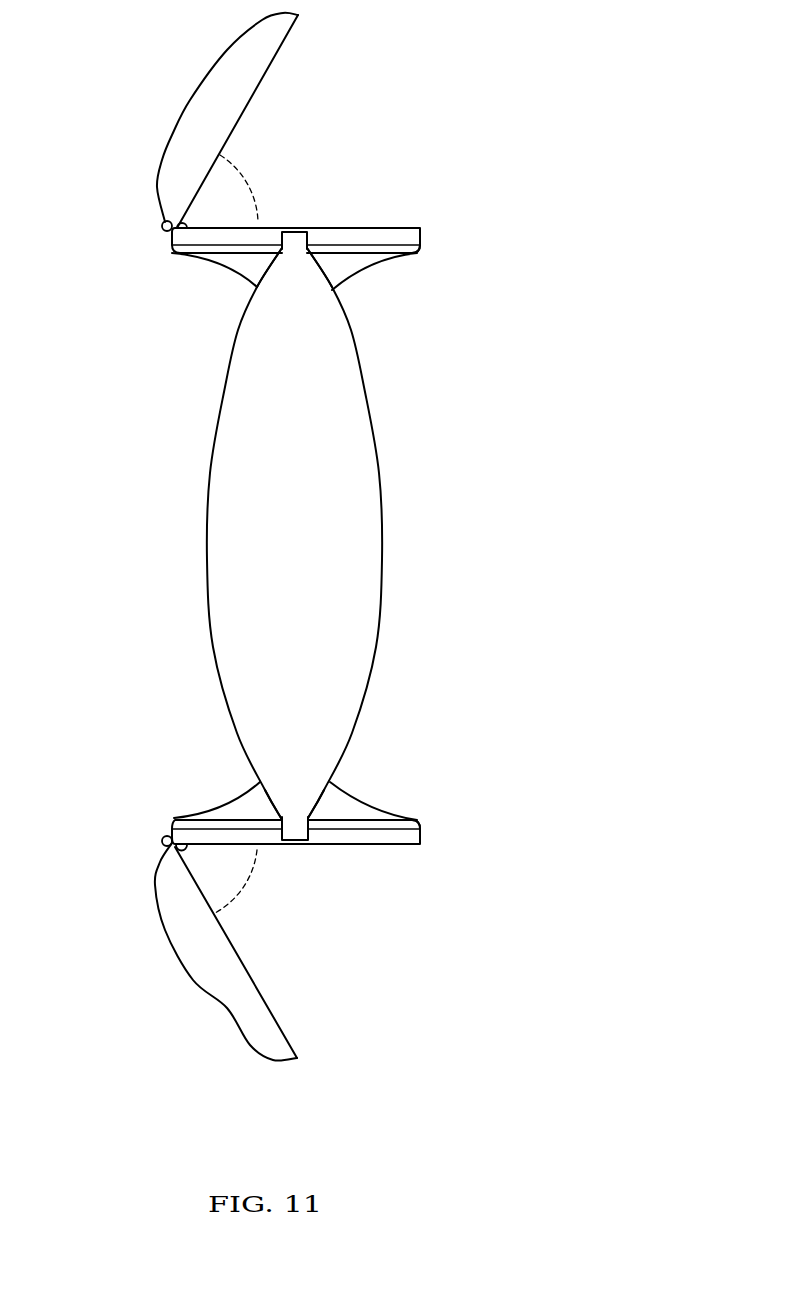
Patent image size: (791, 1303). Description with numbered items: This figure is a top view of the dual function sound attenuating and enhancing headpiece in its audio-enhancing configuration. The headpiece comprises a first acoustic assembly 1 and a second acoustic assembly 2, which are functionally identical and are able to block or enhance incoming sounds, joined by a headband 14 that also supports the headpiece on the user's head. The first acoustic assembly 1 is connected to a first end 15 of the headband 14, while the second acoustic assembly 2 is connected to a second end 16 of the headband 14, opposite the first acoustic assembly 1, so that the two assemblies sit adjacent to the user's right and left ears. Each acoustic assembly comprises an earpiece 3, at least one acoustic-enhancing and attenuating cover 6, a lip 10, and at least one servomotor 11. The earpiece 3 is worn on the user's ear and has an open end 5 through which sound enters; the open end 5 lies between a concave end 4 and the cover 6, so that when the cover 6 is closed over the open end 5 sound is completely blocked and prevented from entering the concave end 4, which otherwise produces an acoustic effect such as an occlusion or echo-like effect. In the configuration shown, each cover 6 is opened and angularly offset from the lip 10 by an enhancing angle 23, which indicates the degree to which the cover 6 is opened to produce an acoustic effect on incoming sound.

The first acoustic assembly 1 is at (98, 863).
The second acoustic assembly 2 is at (108, 208).
The earpiece 3 is at (370, 272).
The concave end 4 is at (257, 287).
The open end 5 is at (420, 229).
The acoustic-enhancing and attenuating cover 6 is at (228, 55).
The lip 10 is at (417, 241).
The servomotor 11 is at (162, 231).
The headband 14 is at (198, 547).
The first end 15 is at (291, 819).
The second end 16 is at (289, 234).
The enhancing angle 23 is at (250, 183).